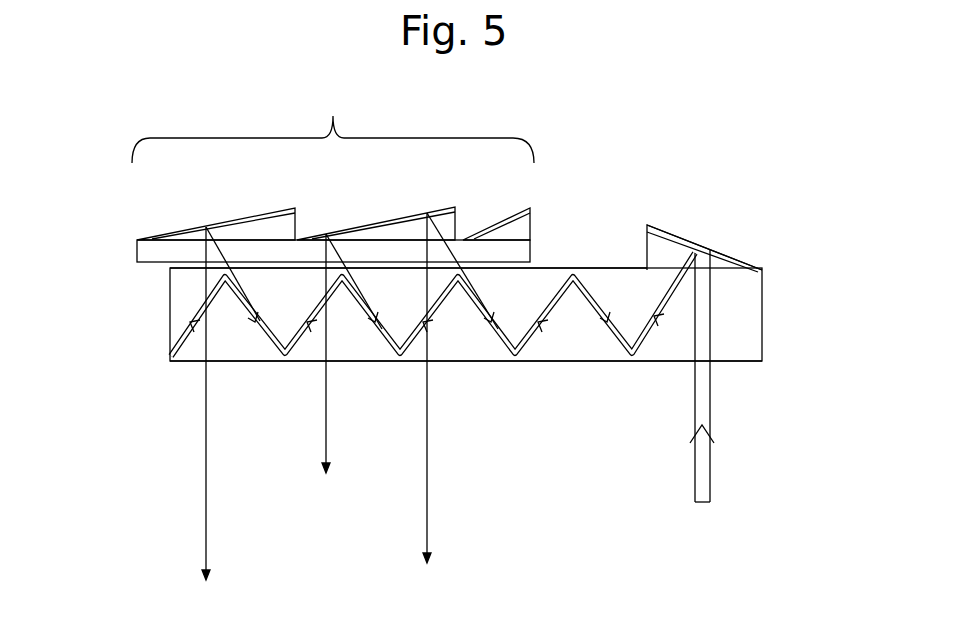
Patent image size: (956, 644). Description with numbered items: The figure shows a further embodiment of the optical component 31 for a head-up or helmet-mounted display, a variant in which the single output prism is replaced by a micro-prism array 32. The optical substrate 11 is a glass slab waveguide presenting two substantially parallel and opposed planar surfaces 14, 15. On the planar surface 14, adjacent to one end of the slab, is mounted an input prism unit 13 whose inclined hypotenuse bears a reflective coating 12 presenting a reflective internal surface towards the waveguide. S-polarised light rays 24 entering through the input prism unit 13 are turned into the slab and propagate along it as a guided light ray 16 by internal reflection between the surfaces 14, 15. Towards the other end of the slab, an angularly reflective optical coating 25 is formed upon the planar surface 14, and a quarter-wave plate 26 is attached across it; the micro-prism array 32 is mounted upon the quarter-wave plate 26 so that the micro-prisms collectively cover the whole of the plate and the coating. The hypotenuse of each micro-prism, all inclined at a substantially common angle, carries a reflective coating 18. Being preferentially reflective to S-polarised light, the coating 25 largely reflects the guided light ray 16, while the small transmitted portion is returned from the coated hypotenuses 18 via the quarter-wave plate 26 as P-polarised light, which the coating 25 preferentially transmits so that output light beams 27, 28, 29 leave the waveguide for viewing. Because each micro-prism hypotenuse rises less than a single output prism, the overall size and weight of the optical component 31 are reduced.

The optical substrate 11 is at (745, 310).
The reflective coating 12 is at (743, 263).
The input prism unit 13 is at (670, 255).
The planar surface 14 is at (615, 268).
The planar surface 15 is at (606, 362).
The guided light ray 16 is at (538, 352).
The reflective coating 18 is at (236, 220).
The S-polarised light rays 24 is at (703, 472).
The angularly reflective optical coating 25 is at (193, 269).
The quarter-wave plate 26 is at (145, 250).
The output light beam 27 is at (427, 527).
The output light beam 28 is at (326, 447).
The output light beam 29 is at (206, 533).
The optical component 31 is at (238, 92).
The micro-prism array 32 is at (333, 124).